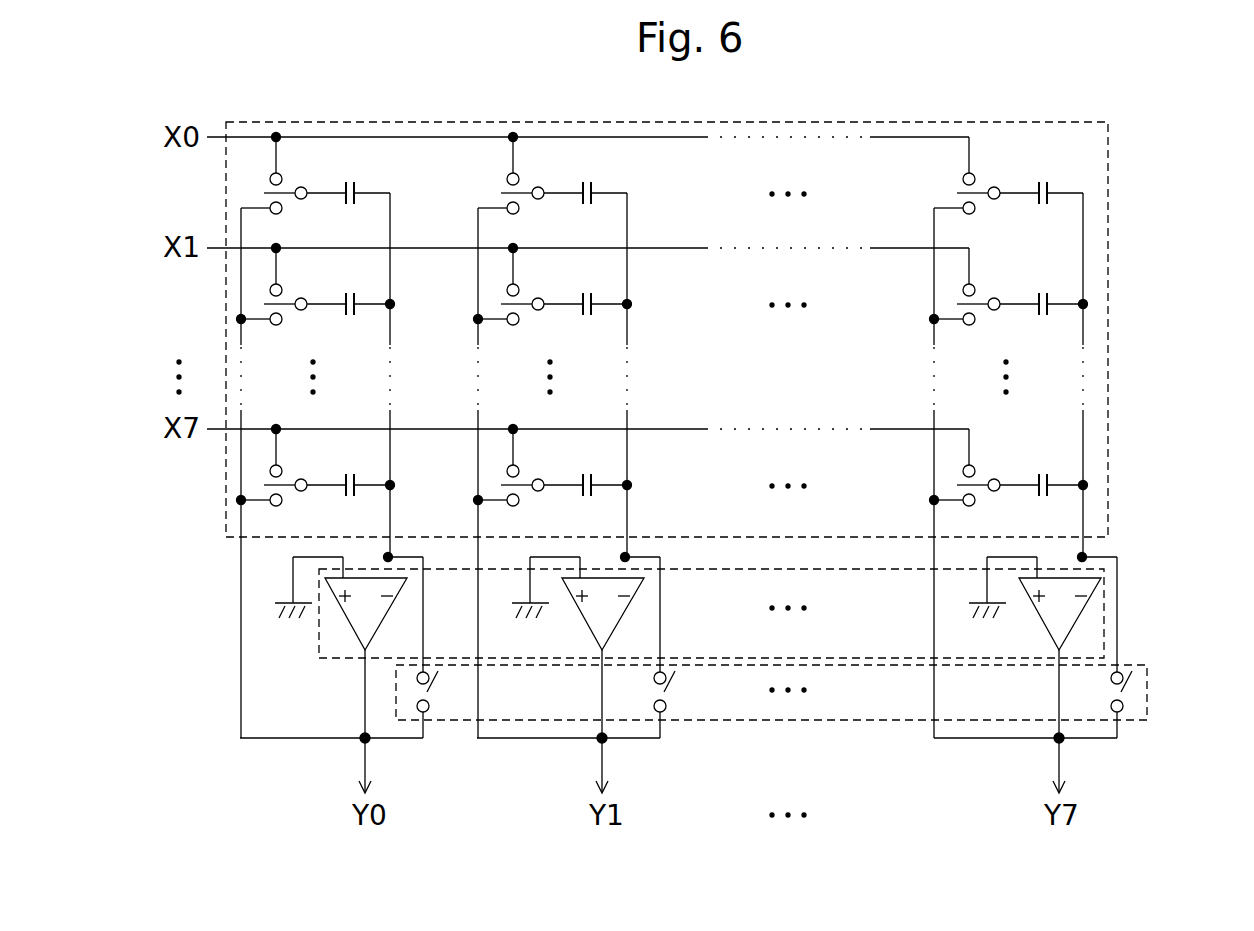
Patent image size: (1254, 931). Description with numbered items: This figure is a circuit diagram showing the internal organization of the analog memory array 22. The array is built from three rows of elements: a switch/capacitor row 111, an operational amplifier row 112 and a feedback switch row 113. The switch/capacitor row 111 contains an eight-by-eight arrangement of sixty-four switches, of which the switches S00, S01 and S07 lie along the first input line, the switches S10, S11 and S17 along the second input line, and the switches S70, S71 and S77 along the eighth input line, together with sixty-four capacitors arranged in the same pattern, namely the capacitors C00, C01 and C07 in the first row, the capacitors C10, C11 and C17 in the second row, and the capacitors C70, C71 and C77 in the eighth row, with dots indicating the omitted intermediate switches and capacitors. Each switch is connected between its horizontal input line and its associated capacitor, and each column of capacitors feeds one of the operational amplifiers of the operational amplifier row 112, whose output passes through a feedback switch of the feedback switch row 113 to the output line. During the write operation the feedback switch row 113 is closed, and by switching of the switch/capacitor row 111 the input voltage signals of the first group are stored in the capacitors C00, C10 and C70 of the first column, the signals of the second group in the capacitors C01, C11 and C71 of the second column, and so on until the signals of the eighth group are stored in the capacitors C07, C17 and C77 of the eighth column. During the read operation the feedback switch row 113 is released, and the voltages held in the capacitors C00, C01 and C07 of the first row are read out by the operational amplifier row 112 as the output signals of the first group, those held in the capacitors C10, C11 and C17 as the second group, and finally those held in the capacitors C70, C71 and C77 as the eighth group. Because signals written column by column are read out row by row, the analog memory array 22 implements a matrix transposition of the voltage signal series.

The analog memory array 22 is at (1252, 143).
The switch/capacitor row 111 is at (716, 430).
The operational amplifier row 112 is at (1104, 617).
The feedback switch row 113 is at (1147, 690).
The switch S00 is at (291, 175).
The switch S01 is at (528, 175).
The switch S07 is at (984, 175).
The switch S10 is at (291, 286).
The switch S11 is at (528, 286).
The switch S17 is at (984, 286).
The switch S70 is at (291, 467).
The switch S71 is at (528, 467).
The switch S77 is at (984, 467).
The capacitor C00 is at (348, 210).
The capacitor C01 is at (585, 210).
The capacitor C07 is at (1041, 210).
The capacitor C10 is at (348, 321).
The capacitor C11 is at (585, 321).
The capacitor C17 is at (1041, 321).
The capacitor C70 is at (348, 502).
The capacitor C71 is at (585, 502).
The capacitor C77 is at (1041, 502).